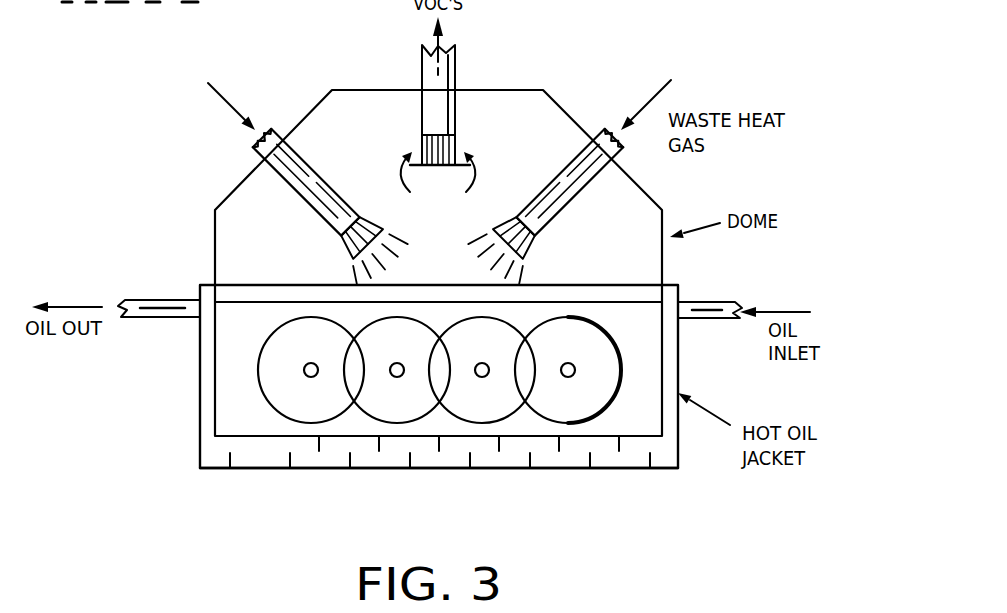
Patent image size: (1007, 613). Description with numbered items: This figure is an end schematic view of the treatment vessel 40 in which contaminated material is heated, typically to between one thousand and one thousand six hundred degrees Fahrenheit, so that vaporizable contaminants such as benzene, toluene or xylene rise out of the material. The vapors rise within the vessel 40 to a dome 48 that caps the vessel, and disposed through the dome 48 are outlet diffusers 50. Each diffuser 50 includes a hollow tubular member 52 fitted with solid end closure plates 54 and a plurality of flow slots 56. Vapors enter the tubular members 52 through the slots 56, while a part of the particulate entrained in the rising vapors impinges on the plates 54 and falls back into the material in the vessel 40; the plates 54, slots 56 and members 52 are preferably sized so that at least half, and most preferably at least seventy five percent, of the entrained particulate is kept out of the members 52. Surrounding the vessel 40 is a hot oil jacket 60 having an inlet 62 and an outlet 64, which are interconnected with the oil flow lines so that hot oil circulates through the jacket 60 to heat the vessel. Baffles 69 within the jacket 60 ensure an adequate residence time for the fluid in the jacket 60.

The treatment vessel 40 is at (200, 423).
The dome 48 is at (208, 213).
The outlet diffusers 50 is at (313, 167).
The hollow tubular member 52 is at (270, 174).
The solid end closure plates 54 is at (340, 273).
The flow slots 56 is at (365, 223).
The hot oil jacket 60 is at (635, 470).
The inlet 62 is at (687, 322).
The outlet 64 is at (178, 320).
The baffles 69 is at (260, 440).